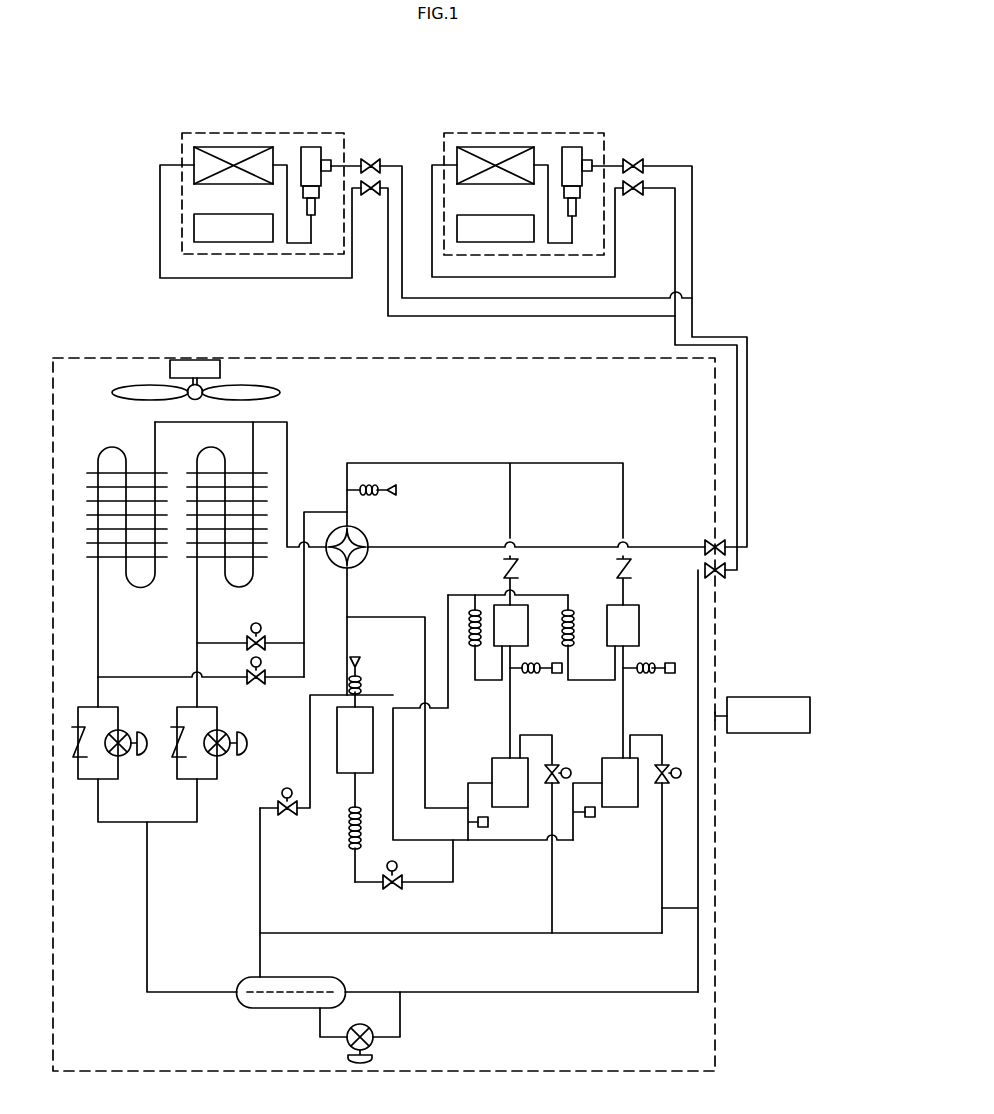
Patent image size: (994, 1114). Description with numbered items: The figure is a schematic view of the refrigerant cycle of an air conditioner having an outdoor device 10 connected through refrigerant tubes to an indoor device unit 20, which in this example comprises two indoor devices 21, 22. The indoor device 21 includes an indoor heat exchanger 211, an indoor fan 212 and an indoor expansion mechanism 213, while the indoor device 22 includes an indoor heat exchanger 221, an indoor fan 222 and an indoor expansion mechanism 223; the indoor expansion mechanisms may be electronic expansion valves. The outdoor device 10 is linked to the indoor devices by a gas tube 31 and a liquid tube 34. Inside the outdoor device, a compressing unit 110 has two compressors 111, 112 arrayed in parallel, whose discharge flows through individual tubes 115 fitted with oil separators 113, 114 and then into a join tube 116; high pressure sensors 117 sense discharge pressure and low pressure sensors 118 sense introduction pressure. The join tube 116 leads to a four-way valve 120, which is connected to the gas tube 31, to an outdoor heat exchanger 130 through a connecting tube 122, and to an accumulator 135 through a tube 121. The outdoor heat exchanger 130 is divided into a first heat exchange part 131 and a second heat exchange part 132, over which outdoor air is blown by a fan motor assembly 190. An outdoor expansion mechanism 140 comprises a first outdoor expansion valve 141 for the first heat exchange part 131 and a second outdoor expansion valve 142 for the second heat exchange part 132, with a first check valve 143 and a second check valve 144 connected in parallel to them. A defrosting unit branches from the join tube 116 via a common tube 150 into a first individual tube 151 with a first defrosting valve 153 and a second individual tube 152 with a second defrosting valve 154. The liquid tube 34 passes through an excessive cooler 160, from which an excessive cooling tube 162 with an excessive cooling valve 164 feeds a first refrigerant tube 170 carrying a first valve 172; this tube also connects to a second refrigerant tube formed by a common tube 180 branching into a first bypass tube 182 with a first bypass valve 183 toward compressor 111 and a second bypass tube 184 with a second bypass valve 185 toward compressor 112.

The outdoor device 10 is at (84, 357).
The indoor device unit 20 is at (450, 80).
The indoor device 21 is at (273, 205).
The indoor device 22 is at (537, 220).
The gas tube 31 is at (675, 334).
The liquid tube 34 is at (692, 323).
The compressing unit 110 is at (567, 844).
The compressor 111 is at (510, 807).
The compressor 112 is at (620, 808).
The oil separator 113 is at (521, 611).
The oil separator 114 is at (636, 612).
The individual tube 115 is at (511, 483).
The join tube 116 is at (474, 462).
The high pressure sensor 117 is at (556, 677).
The low pressure sensor 118 is at (482, 828).
The four-way valve 120 is at (362, 531).
The tube 121 is at (348, 638).
The connecting tube 122 is at (287, 434).
The outdoor heat exchanger 130 is at (162, 548).
The first heat exchange part 131 is at (97, 453).
The second heat exchange part 132 is at (198, 449).
The accumulator 135 is at (336, 742).
The outdoor expansion mechanism 140 is at (153, 766).
The first outdoor expansion valve 141 is at (141, 755).
The second outdoor expansion valve 142 is at (239, 758).
The first check valve 143 is at (76, 741).
The second check valve 144 is at (170, 738).
The common tube 150 is at (306, 582).
The first individual tube 151 is at (283, 679).
The second individual tube 152 is at (278, 642).
The first defrosting valve 153 is at (257, 684).
The second defrosting valve 154 is at (251, 627).
The excessive cooler 160 is at (333, 977).
The excessive cooling tube 162 is at (398, 1040).
The excessive cooling valve 164 is at (348, 1058).
The first refrigerant tube 170 is at (261, 904).
The first valve 172 is at (289, 817).
The common tube 180 is at (460, 935).
The first bypass tube 182 is at (551, 907).
The first bypass valve 183 is at (555, 758).
The second bypass tube 184 is at (698, 909).
The second bypass valve 185 is at (668, 785).
The fan motor assembly 190 is at (141, 388).
The indoor heat exchanger 211 is at (233, 147).
The indoor fan 212 is at (208, 242).
The indoor expansion mechanism 213 is at (311, 150).
The indoor heat exchanger 221 is at (496, 147).
The indoor fan 222 is at (474, 242).
The indoor expansion mechanism 223 is at (572, 151).